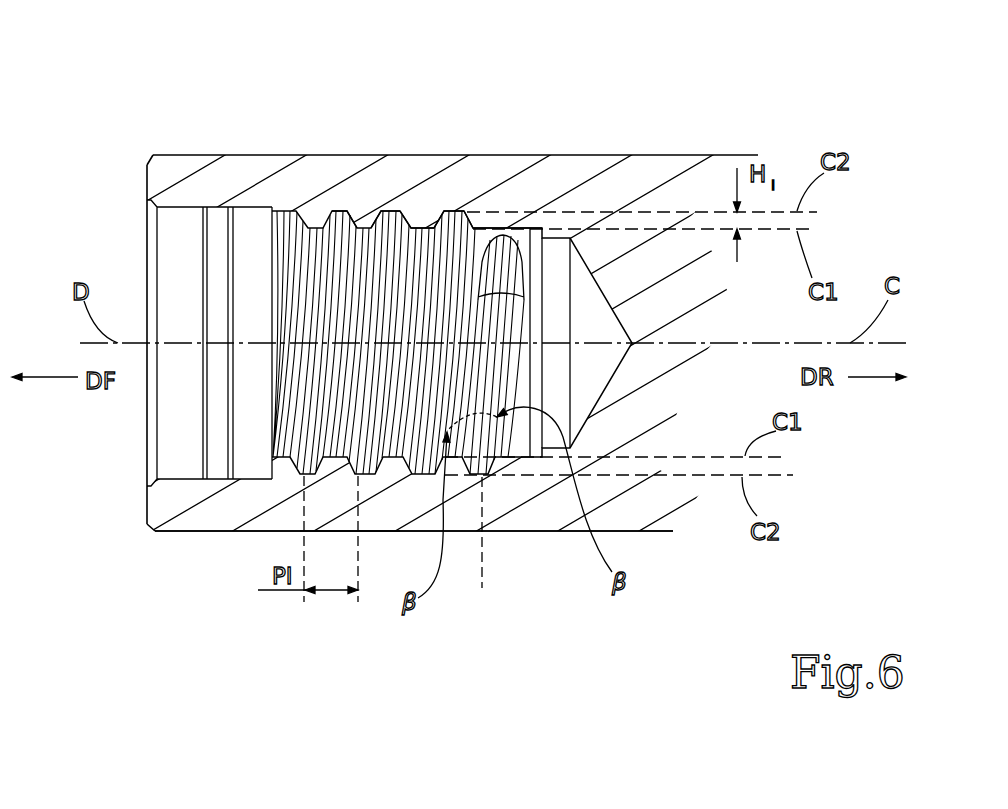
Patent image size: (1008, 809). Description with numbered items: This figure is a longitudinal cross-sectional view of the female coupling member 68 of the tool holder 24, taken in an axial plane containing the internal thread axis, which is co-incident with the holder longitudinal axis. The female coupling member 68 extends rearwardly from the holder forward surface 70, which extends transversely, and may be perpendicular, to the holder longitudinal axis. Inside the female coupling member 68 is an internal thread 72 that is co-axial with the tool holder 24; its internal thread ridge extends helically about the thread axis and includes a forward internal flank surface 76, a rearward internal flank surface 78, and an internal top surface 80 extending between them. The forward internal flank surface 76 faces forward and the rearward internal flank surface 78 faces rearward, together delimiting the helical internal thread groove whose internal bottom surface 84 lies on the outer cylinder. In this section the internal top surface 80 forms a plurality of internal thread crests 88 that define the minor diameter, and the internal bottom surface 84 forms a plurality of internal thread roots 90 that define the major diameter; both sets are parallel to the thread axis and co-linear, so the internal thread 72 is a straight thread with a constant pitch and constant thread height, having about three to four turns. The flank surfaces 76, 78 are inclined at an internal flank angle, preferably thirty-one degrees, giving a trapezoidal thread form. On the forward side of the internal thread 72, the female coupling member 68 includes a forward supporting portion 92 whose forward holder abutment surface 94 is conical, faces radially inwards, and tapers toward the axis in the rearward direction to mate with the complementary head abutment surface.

The tool holder 24 is at (670, 108).
The holder forward surface 70 is at (148, 192).
The forward holder abutment surface 94 is at (188, 209).
The internal thread 72 is at (314, 242).
The internal thread crests 88 is at (348, 216).
The internal thread roots 90 is at (383, 213).
The internal top surface 80 is at (412, 220).
The forward internal flank surface 76 is at (447, 213).
The internal bottom surface 84 is at (499, 232).
The rearward internal flank surface 78 is at (487, 233).
The forward supporting portion 92 is at (193, 523).
The female coupling member 68 is at (386, 560).